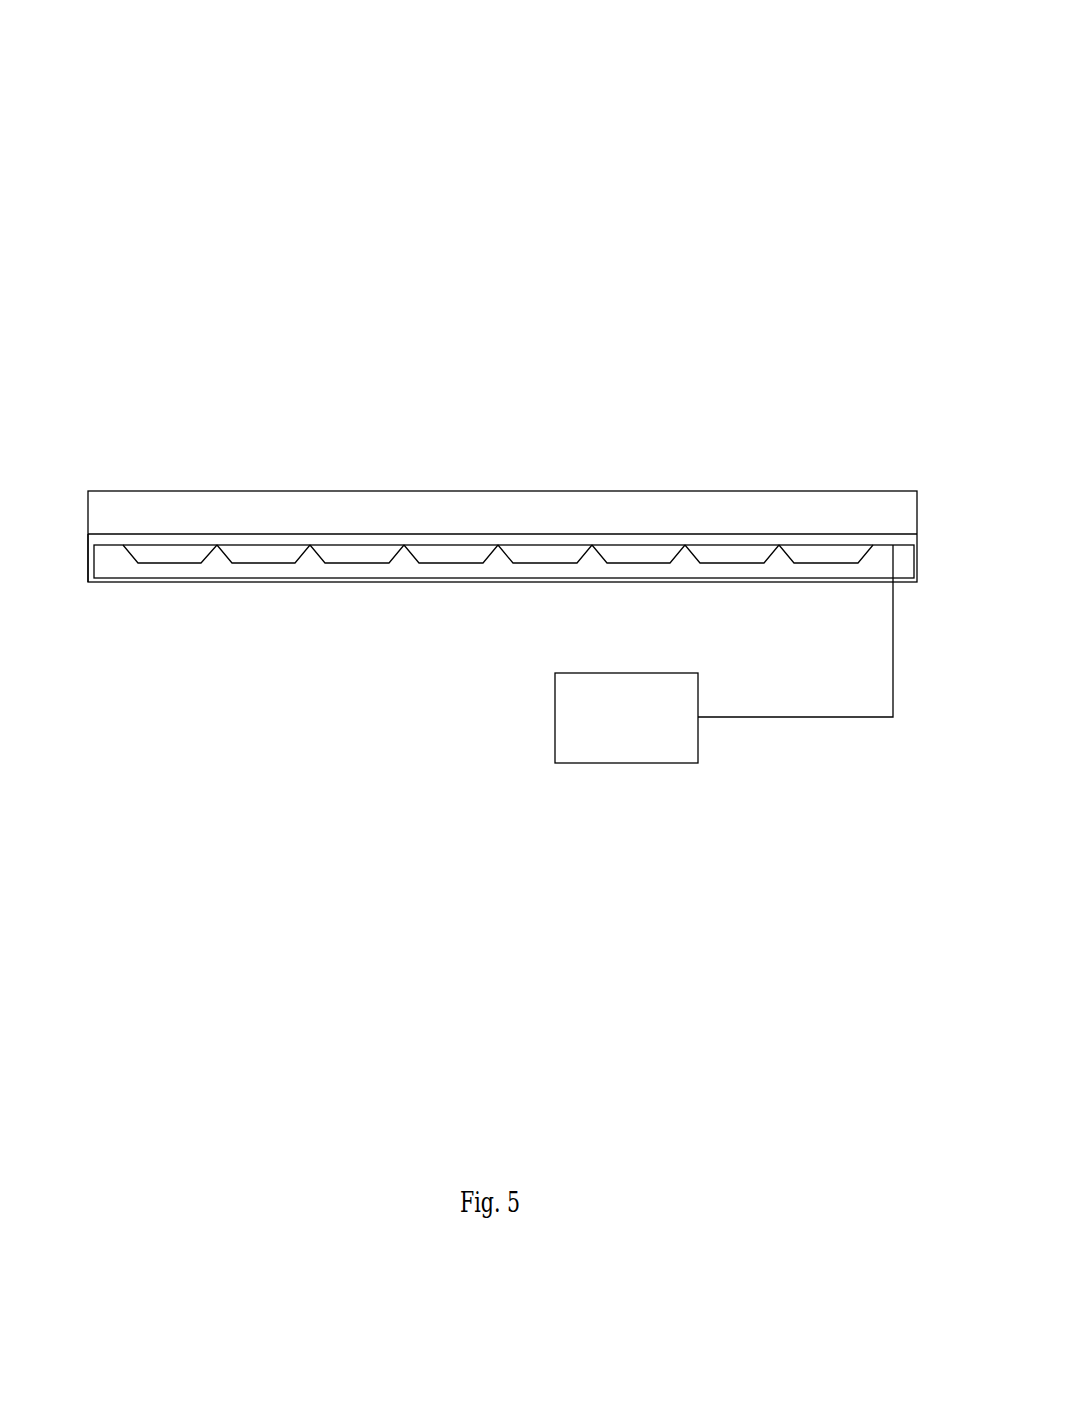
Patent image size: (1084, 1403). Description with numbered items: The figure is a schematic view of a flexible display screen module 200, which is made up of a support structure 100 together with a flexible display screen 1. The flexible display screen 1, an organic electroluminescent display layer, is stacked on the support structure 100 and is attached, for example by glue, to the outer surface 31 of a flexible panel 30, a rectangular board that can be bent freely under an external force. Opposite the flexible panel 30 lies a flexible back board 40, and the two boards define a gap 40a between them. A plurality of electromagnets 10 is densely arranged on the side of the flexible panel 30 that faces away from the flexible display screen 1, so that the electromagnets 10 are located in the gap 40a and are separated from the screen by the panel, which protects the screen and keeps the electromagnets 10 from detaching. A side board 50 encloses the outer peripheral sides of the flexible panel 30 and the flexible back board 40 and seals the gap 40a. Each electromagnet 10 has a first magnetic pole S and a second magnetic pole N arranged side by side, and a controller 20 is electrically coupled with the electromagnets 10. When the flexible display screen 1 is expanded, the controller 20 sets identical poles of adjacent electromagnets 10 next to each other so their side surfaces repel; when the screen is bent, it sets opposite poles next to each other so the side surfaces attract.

The flexible display screen module 200 is at (570, 123).
The flexible display screen 1 is at (667, 516).
The electromagnet 10 is at (268, 549).
The outer surface 31 is at (806, 536).
The flexible panel 30 is at (889, 540).
The side board 50 is at (87, 572).
The flexible back board 40 is at (626, 580).
The gap 40a is at (220, 573).
The support structure 100 is at (368, 628).
The controller 20 is at (555, 742).